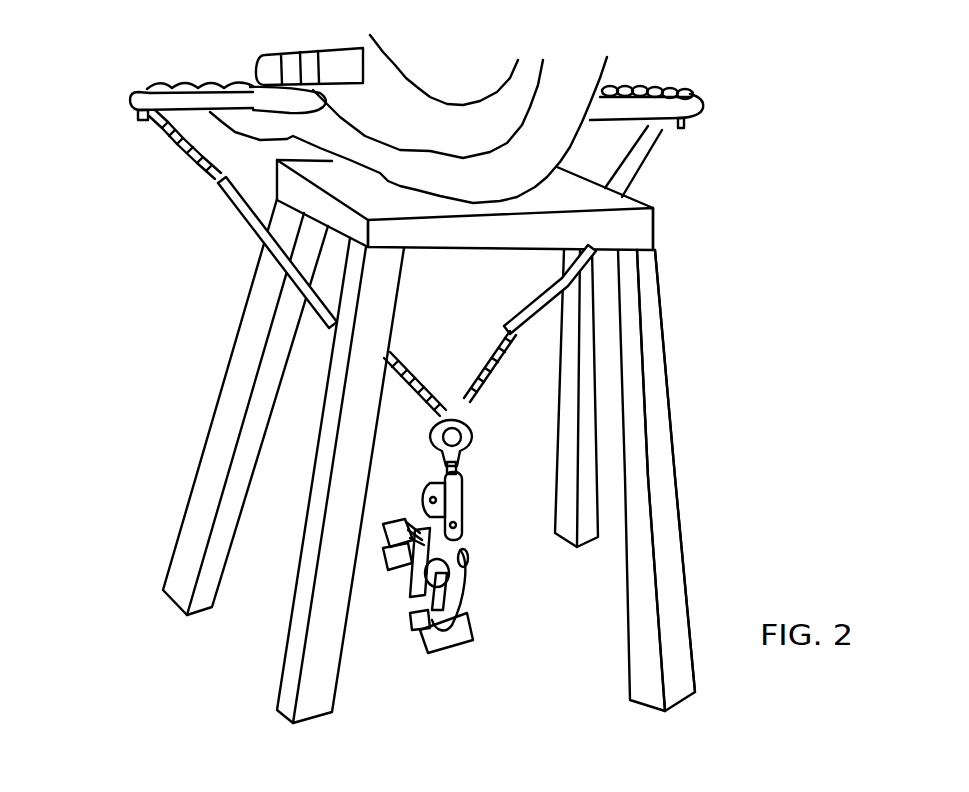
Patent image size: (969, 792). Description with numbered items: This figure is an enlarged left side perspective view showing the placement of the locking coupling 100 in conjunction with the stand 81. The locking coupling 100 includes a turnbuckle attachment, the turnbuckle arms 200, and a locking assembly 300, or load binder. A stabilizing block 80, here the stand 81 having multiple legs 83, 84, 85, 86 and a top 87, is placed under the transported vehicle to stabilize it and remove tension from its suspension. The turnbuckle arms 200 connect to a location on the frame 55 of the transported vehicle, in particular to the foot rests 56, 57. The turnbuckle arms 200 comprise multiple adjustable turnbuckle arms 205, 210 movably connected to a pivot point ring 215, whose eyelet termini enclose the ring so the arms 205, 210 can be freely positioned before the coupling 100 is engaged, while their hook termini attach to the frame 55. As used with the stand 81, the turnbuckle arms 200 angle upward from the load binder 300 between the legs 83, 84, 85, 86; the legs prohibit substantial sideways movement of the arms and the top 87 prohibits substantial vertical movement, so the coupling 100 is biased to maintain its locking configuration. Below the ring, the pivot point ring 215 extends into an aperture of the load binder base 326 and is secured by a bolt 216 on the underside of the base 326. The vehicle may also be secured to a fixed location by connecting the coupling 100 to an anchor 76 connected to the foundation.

The frame 55 is at (462, 77).
The foot rest 56 is at (682, 115).
The foot rest 57 is at (149, 107).
The anchor 76 is at (455, 628).
The stabilizing block 80 is at (658, 352).
The stand 81 is at (665, 580).
The leg 83 is at (700, 480).
The leg 84 is at (557, 543).
The leg 85 is at (213, 562).
The leg 86 is at (290, 670).
The top 87 is at (640, 234).
The locking coupling 100 is at (494, 594).
The turnbuckle arms 200 is at (527, 210).
The adjustable turnbuckle arm 205 is at (647, 147).
The adjustable turnbuckle arm 210 is at (227, 190).
The pivot point ring 215 is at (486, 443).
The bolt 216 is at (447, 472).
The locking assembly 300 is at (568, 443).
The load binder base 326 is at (492, 506).